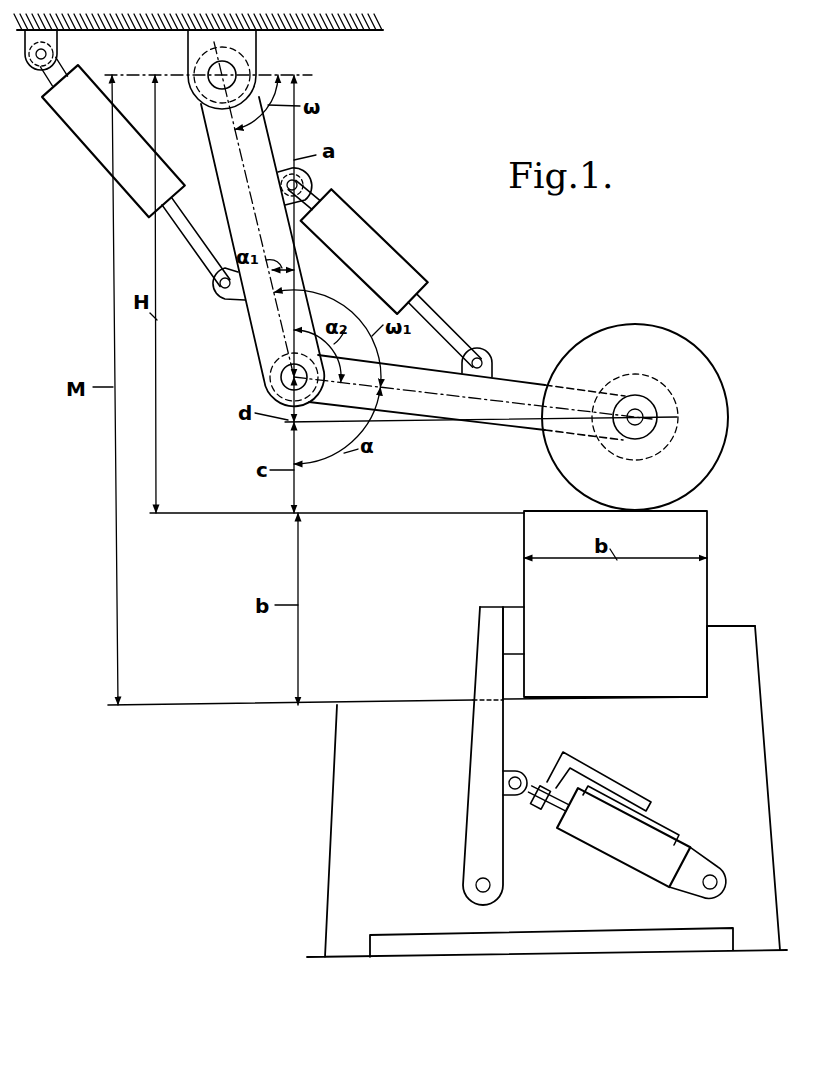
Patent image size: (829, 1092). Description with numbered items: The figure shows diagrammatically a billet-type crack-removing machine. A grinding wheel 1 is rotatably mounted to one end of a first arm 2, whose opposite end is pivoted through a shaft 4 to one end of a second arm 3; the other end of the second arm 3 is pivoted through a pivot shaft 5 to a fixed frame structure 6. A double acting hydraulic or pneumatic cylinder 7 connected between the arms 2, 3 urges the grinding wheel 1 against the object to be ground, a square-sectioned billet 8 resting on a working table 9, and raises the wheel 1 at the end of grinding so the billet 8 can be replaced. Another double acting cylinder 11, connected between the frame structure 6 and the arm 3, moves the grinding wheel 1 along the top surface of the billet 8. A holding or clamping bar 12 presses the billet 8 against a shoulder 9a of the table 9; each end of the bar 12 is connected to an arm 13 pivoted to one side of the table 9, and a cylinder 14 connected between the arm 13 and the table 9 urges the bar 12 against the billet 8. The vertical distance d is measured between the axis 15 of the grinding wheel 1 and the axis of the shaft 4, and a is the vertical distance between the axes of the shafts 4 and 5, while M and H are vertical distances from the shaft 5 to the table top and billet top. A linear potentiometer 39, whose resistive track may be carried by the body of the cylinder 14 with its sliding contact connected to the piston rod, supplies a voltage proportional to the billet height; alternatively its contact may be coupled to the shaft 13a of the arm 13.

The grinding wheel 1 is at (667, 338).
The first arm 2 is at (517, 386).
The second arm 3 is at (250, 322).
The shaft 4 is at (282, 377).
The pivot shaft 5 is at (236, 68).
The fixed frame structure 6 is at (350, 31).
The double acting hydraulic or pneumatic cylinder 7 is at (396, 258).
The billet 8 is at (698, 586).
The working table 9 is at (337, 828).
The shoulder 9a is at (704, 684).
The double acting hydraulic or pneumatic cylinder 11 is at (94, 148).
The holding or clamping bar 12 is at (512, 615).
The arm 13 is at (485, 675).
The shaft 13a is at (476, 885).
The hydraulic or pneumatic cylinder 14 is at (620, 852).
The axis 15 is at (641, 423).
The potentiometer 39 is at (660, 810).